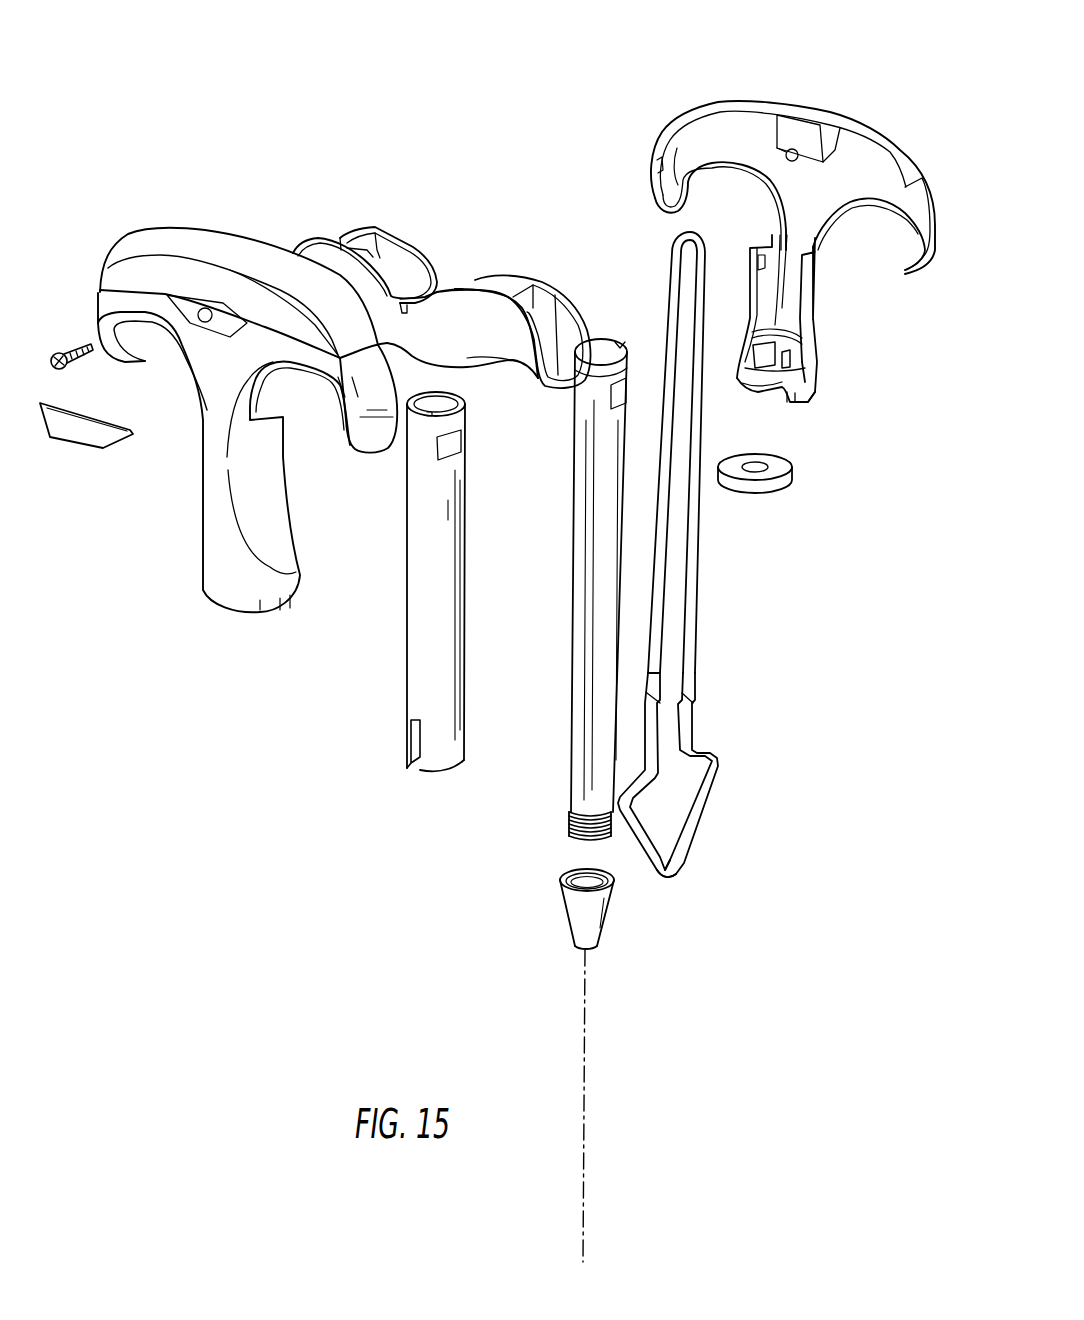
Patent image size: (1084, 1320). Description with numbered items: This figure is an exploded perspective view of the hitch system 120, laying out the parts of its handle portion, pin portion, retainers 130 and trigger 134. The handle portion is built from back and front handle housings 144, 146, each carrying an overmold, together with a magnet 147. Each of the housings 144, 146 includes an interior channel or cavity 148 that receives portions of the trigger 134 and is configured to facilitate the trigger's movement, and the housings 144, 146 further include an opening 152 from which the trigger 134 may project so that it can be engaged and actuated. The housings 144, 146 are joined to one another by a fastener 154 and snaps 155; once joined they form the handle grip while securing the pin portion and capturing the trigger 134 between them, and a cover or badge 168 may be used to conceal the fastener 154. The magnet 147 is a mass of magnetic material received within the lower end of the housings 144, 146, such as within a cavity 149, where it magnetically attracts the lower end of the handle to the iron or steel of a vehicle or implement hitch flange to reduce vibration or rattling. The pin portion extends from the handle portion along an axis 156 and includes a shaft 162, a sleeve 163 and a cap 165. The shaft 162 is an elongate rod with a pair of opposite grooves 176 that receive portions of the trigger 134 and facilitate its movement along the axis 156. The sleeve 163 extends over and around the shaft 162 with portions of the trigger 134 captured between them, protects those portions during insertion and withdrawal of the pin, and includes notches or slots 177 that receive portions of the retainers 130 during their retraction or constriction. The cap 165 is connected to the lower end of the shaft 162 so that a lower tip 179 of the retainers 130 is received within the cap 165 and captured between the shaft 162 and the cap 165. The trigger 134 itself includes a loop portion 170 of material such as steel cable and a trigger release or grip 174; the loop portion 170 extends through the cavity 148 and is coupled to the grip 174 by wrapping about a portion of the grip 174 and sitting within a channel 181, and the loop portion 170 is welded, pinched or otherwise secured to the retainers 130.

The hitch system 120 is at (273, 212).
The back handle housing 144 is at (160, 240).
The front handle housing 146 is at (745, 97).
The magnet 147 is at (790, 478).
The interior channel or cavity 148 is at (795, 312).
The cavity 149 is at (792, 398).
The opening 152 is at (890, 198).
The fastener 154 is at (75, 343).
The snaps 155 is at (750, 354).
The axis 156 is at (585, 1000).
The shaft 162 is at (571, 545).
The sleeve 163 is at (408, 660).
The cap 165 is at (575, 915).
The cover or badge 168 is at (110, 438).
The loop portion 170 is at (700, 570).
The trigger release or grip 174 is at (548, 283).
The grooves 176 is at (573, 760).
The notches or slots 177 is at (408, 740).
The lower tip 179 is at (680, 876).
The channel 181 is at (438, 290).
The retainers 130 is at (718, 770).
The trigger 134 is at (706, 637).